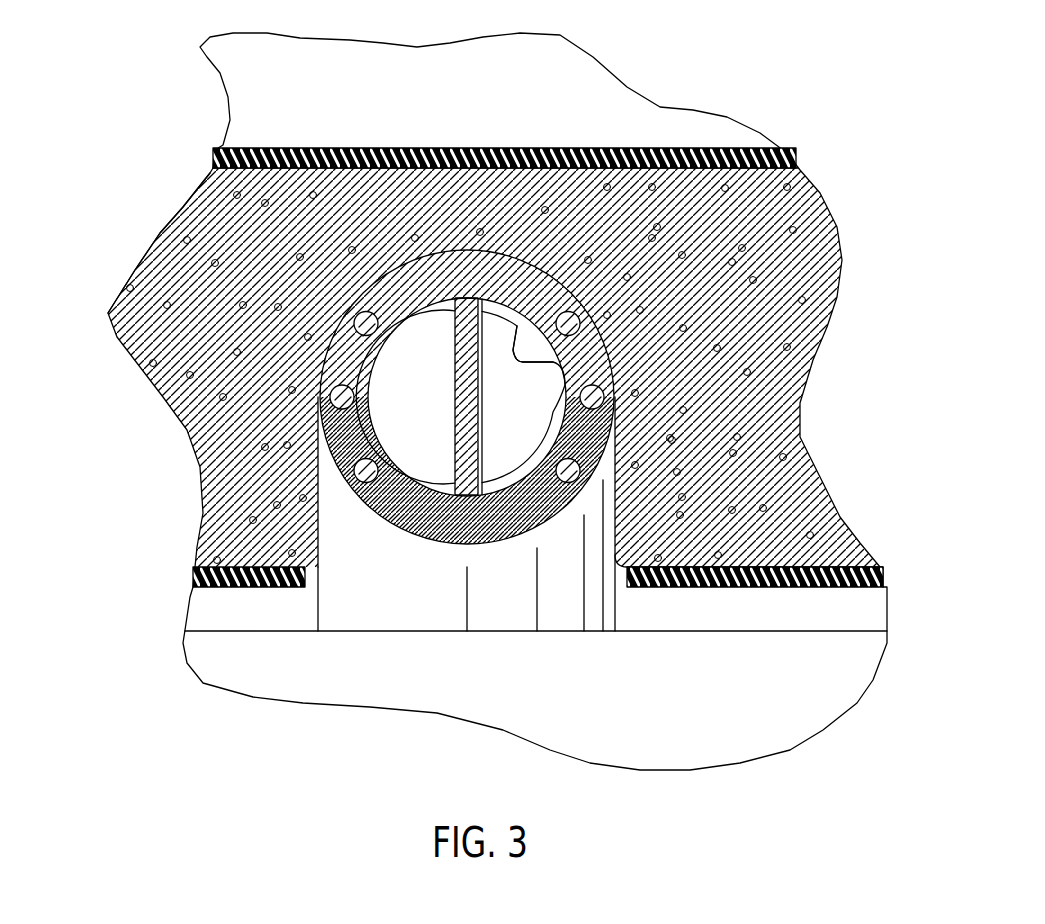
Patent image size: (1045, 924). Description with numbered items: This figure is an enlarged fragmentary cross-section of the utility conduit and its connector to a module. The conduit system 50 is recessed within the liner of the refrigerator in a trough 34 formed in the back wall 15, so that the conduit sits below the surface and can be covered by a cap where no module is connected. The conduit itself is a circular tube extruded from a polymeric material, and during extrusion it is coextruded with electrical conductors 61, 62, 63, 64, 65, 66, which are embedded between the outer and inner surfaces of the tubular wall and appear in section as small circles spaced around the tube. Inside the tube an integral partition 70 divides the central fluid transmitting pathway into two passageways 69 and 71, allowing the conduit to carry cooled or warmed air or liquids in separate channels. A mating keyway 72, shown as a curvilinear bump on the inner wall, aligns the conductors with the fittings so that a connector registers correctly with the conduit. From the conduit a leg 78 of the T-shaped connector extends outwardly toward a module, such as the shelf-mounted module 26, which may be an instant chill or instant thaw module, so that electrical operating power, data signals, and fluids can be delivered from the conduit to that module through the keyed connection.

The back wall 15 is at (832, 588).
The shelf-mounted module 26 is at (713, 727).
The trough 34 is at (622, 537).
The conduit system 50 is at (404, 527).
The electrical conductor 61 is at (655, 252).
The electrical conductor 62 is at (627, 367).
The electrical conductor 63 is at (575, 472).
The electrical conductor 64 is at (355, 462).
The electrical conductor 65 is at (320, 377).
The electrical conductor 66 is at (350, 298).
The passageway 69 is at (404, 403).
The integral partition 70 is at (480, 460).
The passageway 71 is at (498, 403).
The mating keyway 72 is at (510, 340).
The leg 78 is at (317, 610).